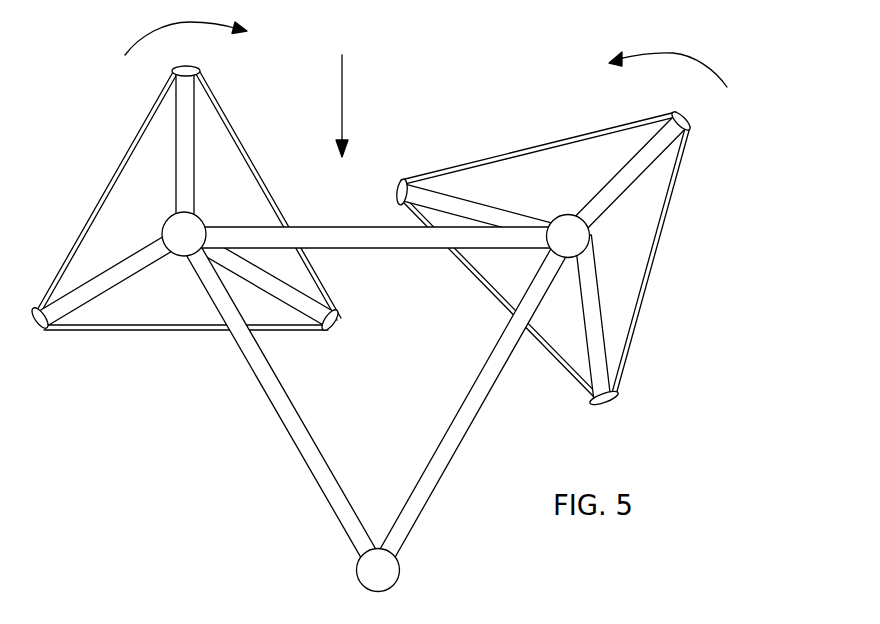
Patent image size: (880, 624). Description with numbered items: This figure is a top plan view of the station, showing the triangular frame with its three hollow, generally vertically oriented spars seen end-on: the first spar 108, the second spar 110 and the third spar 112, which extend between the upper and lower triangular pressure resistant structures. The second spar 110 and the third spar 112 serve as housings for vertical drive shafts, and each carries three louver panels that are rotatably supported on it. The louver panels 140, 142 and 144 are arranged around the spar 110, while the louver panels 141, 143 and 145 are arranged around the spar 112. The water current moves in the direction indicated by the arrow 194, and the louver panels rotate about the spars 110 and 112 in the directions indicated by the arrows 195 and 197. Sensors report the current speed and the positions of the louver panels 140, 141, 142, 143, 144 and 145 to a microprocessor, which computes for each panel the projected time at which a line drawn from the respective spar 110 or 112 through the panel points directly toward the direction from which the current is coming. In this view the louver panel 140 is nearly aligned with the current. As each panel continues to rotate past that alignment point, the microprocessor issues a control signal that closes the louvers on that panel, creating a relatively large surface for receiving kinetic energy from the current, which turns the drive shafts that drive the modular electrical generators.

The first spar 108 is at (362, 582).
The second spar 110 is at (163, 230).
The third spar 112 is at (591, 235).
The louver panel 140 is at (176, 161).
The louver panel 141 is at (597, 322).
The louver panel 142 is at (86, 306).
The louver panel 143 is at (495, 204).
The louver panel 144 is at (265, 289).
The louver panel 145 is at (647, 167).
The arrow 194 is at (342, 95).
The arrow 195 is at (722, 80).
The arrow 197 is at (195, 23).